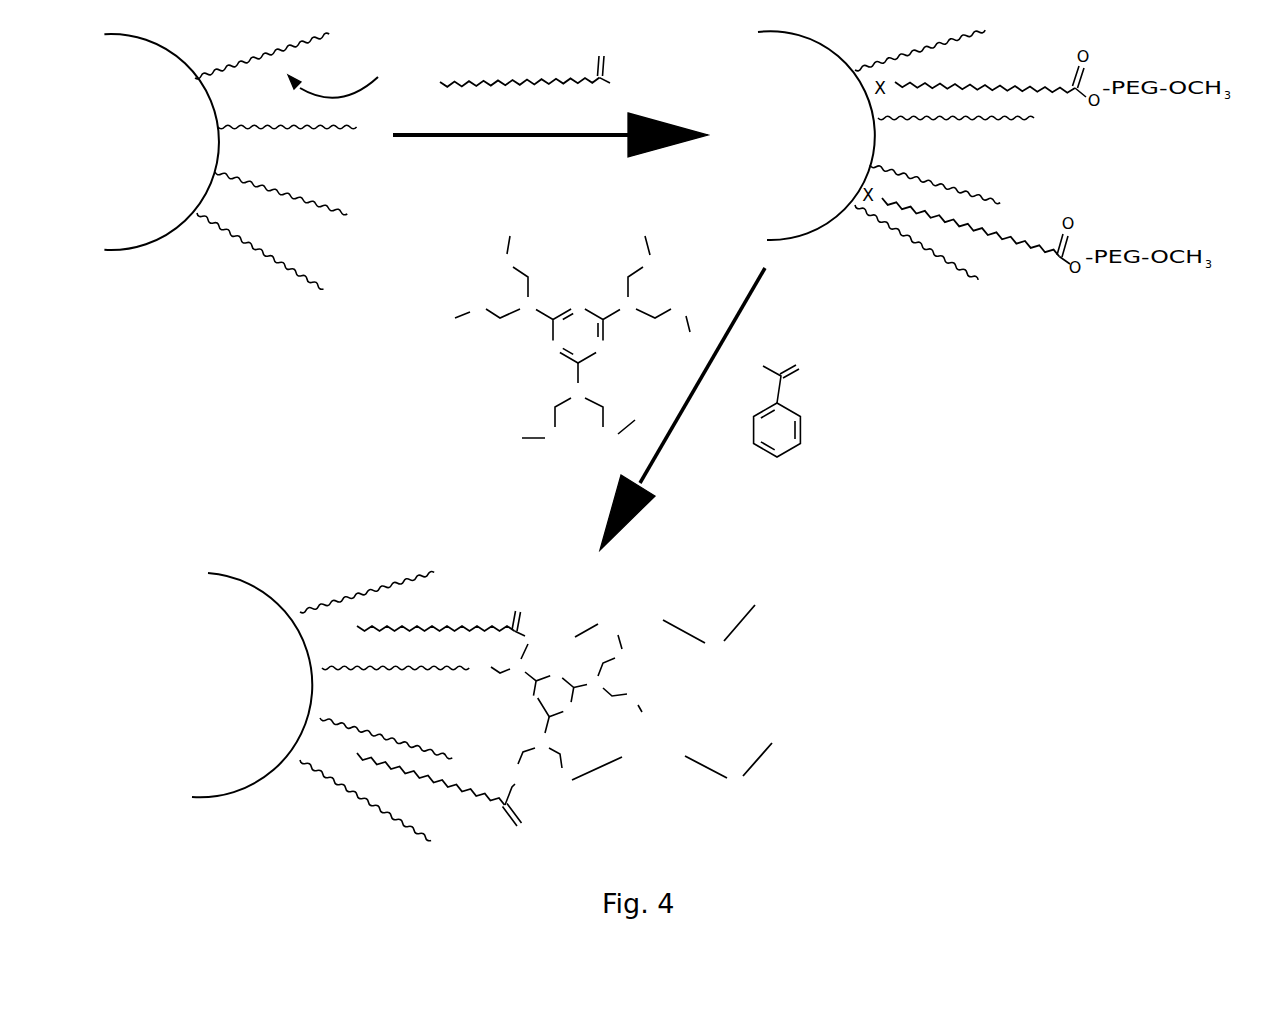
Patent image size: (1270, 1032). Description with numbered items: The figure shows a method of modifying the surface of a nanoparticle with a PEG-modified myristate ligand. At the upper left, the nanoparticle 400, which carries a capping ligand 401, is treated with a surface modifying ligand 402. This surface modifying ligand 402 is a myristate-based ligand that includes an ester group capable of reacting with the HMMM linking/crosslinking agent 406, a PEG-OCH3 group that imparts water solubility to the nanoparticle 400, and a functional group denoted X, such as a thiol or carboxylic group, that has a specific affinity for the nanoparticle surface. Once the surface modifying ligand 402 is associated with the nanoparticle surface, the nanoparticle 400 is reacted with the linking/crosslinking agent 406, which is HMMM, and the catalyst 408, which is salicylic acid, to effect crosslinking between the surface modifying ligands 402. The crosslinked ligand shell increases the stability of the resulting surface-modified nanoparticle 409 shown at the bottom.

The nanoparticle 400 is at (230, 161).
The capping ligand 401 is at (348, 75).
The surface modifying ligand 402 is at (582, 77).
The linking/crosslinking agent 406 is at (572, 357).
The catalyst 408 is at (774, 418).
The surface-modified nanoparticle 409 is at (890, 670).